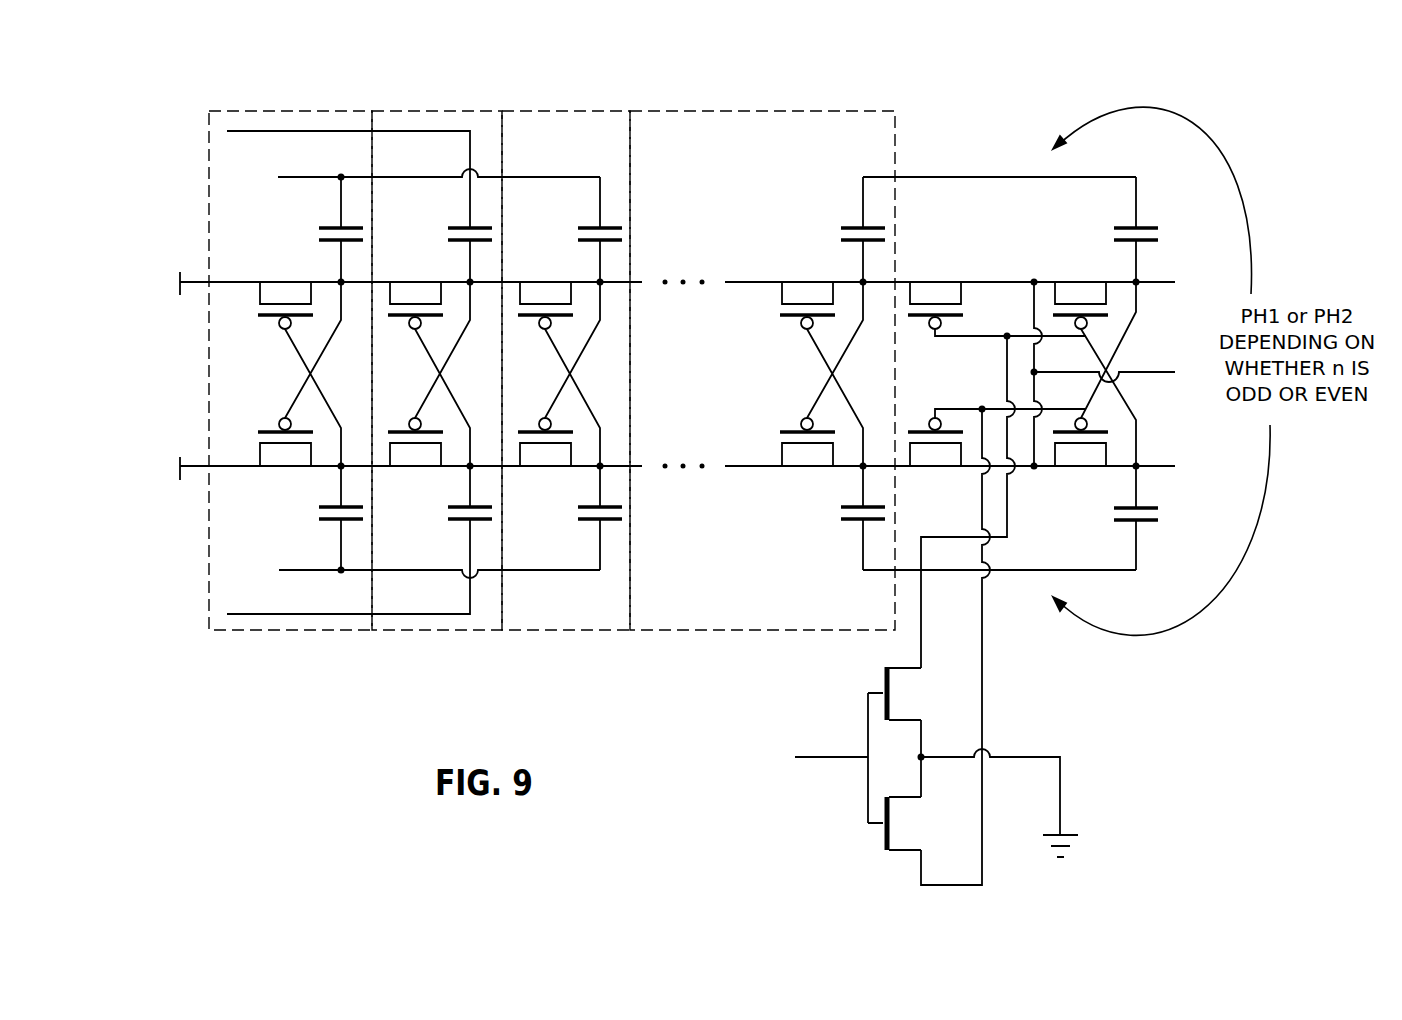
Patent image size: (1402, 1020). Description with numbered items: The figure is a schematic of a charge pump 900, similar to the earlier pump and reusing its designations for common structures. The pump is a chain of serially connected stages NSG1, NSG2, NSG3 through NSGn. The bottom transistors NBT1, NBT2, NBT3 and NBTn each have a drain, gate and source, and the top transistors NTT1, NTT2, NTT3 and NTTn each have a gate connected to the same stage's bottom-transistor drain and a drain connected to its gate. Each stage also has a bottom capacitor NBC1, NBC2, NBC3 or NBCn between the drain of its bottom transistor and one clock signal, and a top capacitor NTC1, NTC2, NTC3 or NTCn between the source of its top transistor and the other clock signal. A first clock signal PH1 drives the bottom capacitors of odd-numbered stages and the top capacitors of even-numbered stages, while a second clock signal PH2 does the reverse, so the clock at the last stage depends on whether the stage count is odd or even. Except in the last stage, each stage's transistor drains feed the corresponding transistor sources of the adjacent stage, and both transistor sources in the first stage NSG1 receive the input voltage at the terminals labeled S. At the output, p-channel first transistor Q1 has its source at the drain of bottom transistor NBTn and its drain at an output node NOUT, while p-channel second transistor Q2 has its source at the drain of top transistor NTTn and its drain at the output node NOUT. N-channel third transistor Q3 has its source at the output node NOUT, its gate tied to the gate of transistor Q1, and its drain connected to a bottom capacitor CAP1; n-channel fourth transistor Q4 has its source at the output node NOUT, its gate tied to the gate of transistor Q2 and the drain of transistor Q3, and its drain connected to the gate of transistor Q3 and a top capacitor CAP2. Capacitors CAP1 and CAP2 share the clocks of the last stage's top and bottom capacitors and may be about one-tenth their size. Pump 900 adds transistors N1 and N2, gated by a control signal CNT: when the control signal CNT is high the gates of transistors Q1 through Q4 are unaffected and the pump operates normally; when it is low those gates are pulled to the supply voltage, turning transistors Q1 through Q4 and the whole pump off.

The charge pump 900 is at (150, 173).
The first clock signal PH1 is at (284, 131).
The second clock signal PH2 is at (314, 177).
The first stage NSG1 is at (348, 111).
The stage NSG2 is at (467, 111).
The stage NSG3 is at (627, 111).
The last stage NSGn is at (872, 111).
The top capacitor NTC1 is at (330, 227).
The top capacitor NTC2 is at (459, 227).
The top capacitor NTC3 is at (589, 227).
The top capacitor NTCn is at (852, 227).
The top transistor NTT1 is at (287, 287).
The top transistor NTT2 is at (417, 287).
The top transistor NTT3 is at (547, 287).
The top transistor NTTn is at (809, 287).
The bottom transistor NBT1 is at (289, 465).
The bottom transistor NBT2 is at (419, 465).
The bottom transistor NBT3 is at (549, 465).
The bottom transistor NBTn is at (811, 465).
The bottom capacitor NBC1 is at (330, 521).
The bottom capacitor NBC2 is at (459, 521).
The bottom capacitor NBC3 is at (589, 521).
The bottom capacitor NBCn is at (852, 521).
The p-channel first transistor Q1 is at (939, 465).
The p-channel second transistor Q2 is at (937, 287).
The third n-channel transistor Q3 is at (1084, 465).
The fourth n-channel transistor Q4 is at (1082, 287).
The bottom capacitor CAP1 is at (1125, 521).
The top capacitor CAP2 is at (1125, 227).
The output node NOUT is at (1112, 363).
The transistor N1 is at (909, 712).
The transistor N2 is at (909, 803).
The control signal CNT is at (910, 802).
The input supply terminal S is at (170, 375).